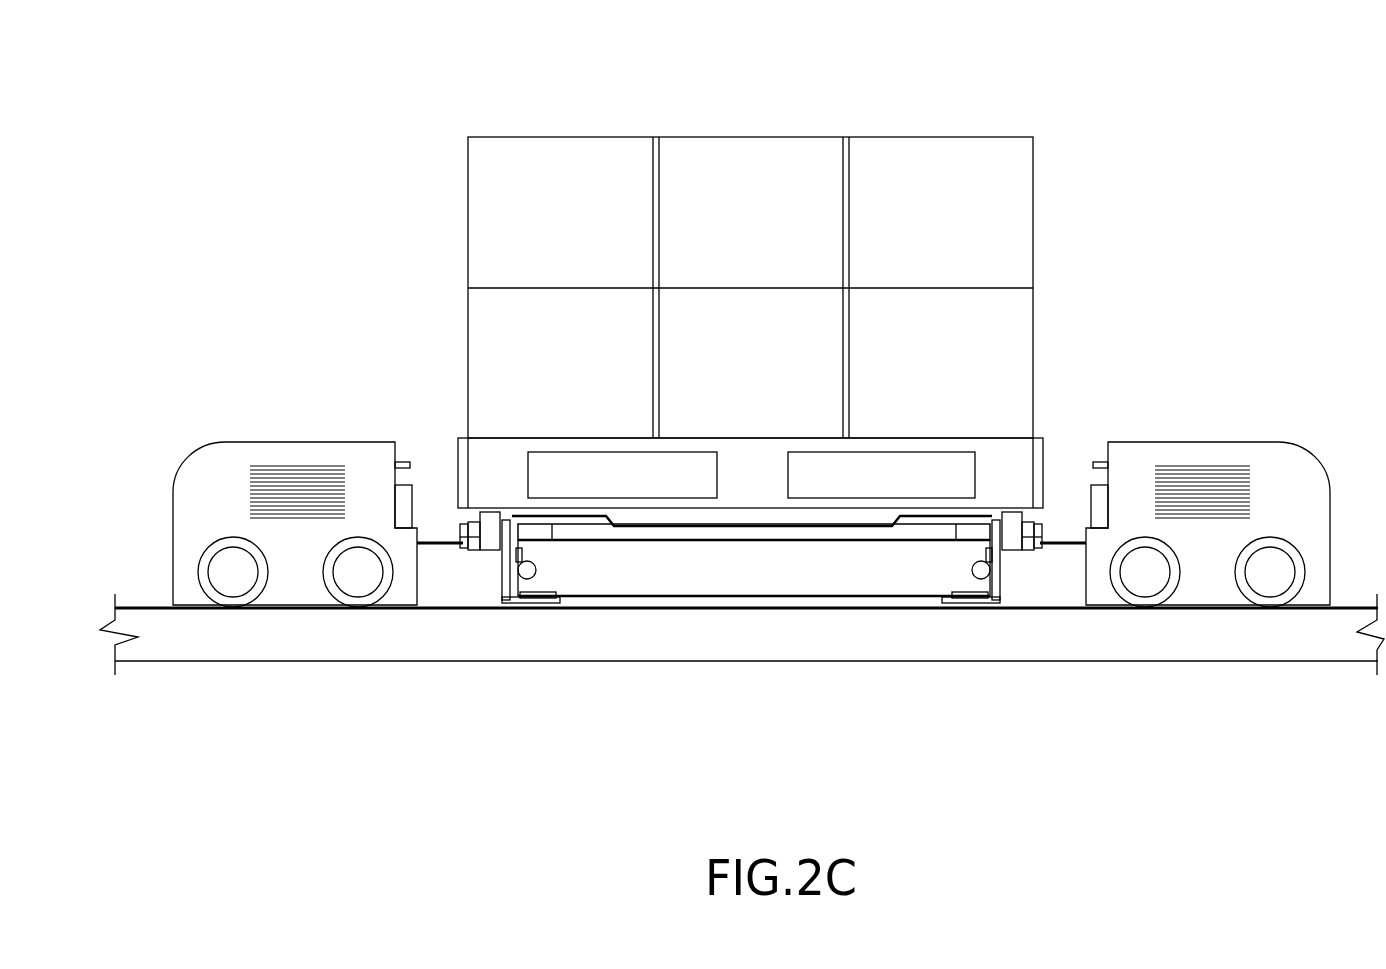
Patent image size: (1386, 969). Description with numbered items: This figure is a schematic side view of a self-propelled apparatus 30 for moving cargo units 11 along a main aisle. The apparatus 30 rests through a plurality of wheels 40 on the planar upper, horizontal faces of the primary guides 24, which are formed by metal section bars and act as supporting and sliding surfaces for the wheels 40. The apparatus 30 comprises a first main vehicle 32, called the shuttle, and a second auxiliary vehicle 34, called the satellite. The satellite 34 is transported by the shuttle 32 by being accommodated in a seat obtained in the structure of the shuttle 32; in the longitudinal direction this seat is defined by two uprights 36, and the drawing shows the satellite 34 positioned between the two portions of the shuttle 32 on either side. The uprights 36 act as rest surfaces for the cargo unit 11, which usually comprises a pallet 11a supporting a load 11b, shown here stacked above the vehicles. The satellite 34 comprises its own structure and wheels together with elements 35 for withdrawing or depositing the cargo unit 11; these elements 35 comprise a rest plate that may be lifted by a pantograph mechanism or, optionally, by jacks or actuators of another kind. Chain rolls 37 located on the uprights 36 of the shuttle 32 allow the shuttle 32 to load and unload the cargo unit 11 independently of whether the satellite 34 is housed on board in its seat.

The cargo unit 11 is at (812, 262).
The pallet 11a is at (998, 472).
The load 11b is at (988, 233).
The primary guide 24 is at (165, 640).
The self-propelled apparatus 30 is at (716, 519).
The first main vehicle 32 is at (193, 447).
The second auxiliary vehicle 34 is at (817, 574).
The elements for withdrawing or depositing the cargo unit 35 is at (700, 534).
The upright 36 is at (488, 578).
The chain roll 37 is at (492, 540).
The wheel 40 is at (226, 582).